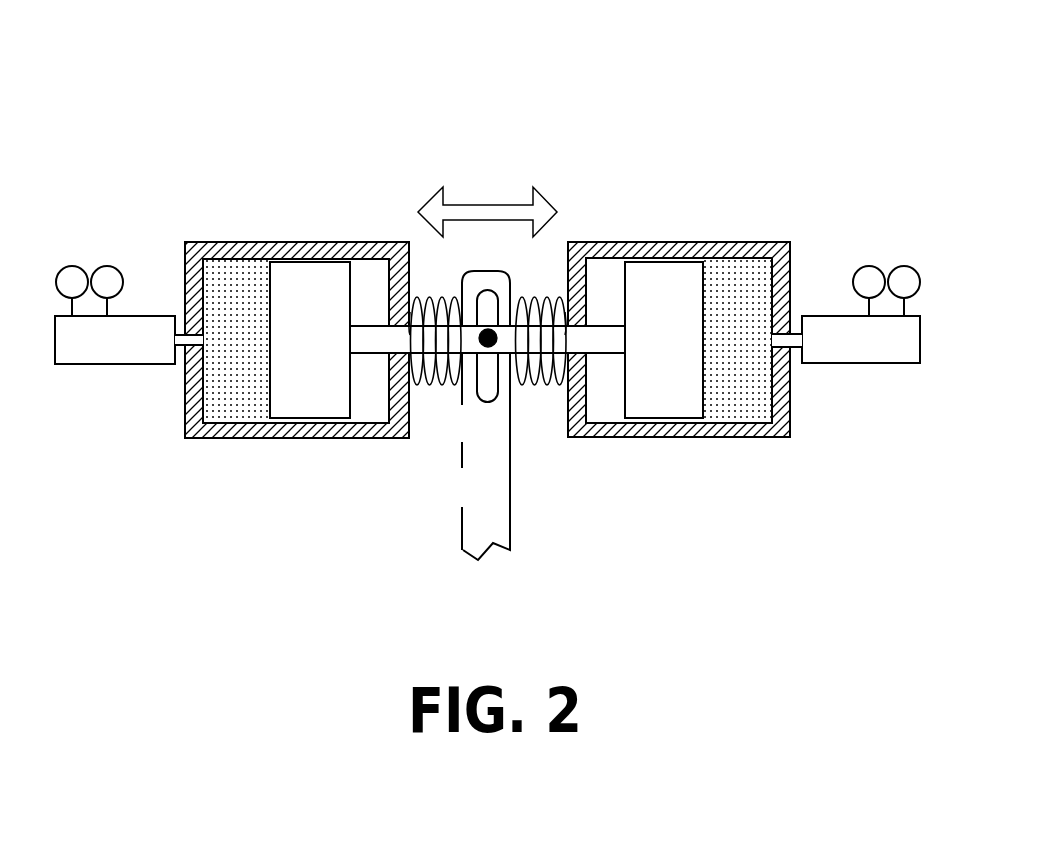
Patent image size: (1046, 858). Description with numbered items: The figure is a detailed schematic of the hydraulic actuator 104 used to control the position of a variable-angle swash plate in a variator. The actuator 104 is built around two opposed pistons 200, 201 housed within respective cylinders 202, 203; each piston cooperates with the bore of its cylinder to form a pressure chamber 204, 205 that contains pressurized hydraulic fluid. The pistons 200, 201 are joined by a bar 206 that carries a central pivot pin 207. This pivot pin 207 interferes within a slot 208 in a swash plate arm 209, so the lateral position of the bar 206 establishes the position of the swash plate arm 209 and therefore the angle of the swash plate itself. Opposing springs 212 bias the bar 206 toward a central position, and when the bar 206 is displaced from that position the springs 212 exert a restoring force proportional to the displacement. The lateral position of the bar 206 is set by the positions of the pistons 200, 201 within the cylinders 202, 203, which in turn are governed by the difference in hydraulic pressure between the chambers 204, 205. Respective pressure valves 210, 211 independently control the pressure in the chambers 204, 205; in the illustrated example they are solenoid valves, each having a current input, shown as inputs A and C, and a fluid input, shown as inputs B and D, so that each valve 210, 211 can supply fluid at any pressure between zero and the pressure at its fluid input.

The hydraulic actuator 104 is at (585, 115).
The piston 200 is at (328, 266).
The piston 201 is at (662, 273).
The cylinder 202 is at (265, 240).
The cylinder 203 is at (732, 250).
The pressure chamber 204 is at (240, 405).
The pressure chamber 205 is at (730, 410).
The bar 206 is at (384, 330).
The central pivot pin 207 is at (483, 347).
The slot 208 is at (487, 402).
The swash plate arm 209 is at (480, 513).
The pressure valve 210 is at (116, 352).
The pressure valve 211 is at (857, 350).
The springs 212 is at (535, 383).